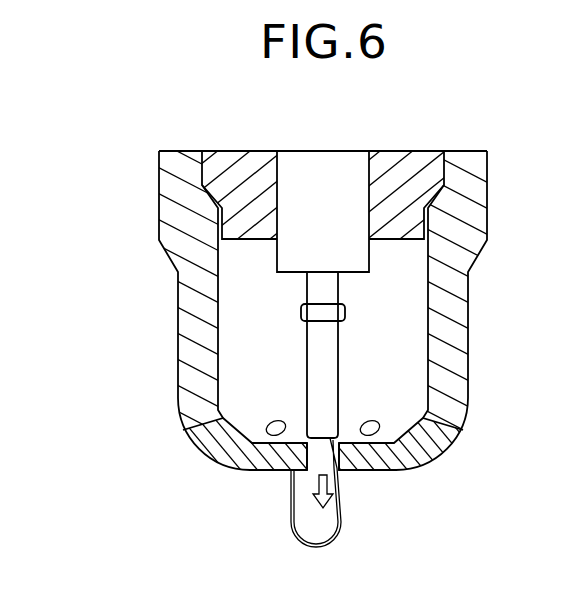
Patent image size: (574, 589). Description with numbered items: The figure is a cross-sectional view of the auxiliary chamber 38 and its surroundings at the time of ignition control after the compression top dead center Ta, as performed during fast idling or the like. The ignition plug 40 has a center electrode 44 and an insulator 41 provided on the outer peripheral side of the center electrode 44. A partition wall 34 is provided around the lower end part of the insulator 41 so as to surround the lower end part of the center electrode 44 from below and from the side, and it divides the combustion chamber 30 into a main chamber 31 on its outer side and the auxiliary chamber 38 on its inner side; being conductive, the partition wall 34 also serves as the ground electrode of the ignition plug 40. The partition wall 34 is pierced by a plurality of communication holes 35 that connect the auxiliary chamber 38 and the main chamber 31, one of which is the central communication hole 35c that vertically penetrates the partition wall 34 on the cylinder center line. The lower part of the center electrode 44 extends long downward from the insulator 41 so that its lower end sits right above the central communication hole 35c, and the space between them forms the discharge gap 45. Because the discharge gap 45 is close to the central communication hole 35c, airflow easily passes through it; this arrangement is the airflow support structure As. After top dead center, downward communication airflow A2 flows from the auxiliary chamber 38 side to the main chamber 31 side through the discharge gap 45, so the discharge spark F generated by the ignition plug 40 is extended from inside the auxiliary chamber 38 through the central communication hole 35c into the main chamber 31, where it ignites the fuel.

The compression top dead center Ta is at (118, 229).
The combustion chamber 30 is at (112, 295).
The auxiliary chamber 38 is at (226, 291).
The main chamber 31 is at (148, 355).
The partition wall 34 is at (457, 310).
The communication holes 35 is at (274, 421).
The central communication hole 35c is at (275, 497).
The ignition plug 40 is at (267, 140).
The insulator 41 is at (418, 160).
The center electrode 44 is at (313, 342).
The discharge gap 45 is at (348, 425).
The airflow support structure As is at (300, 421).
The communication airflow A2 is at (338, 477).
The discharge spark F is at (340, 527).